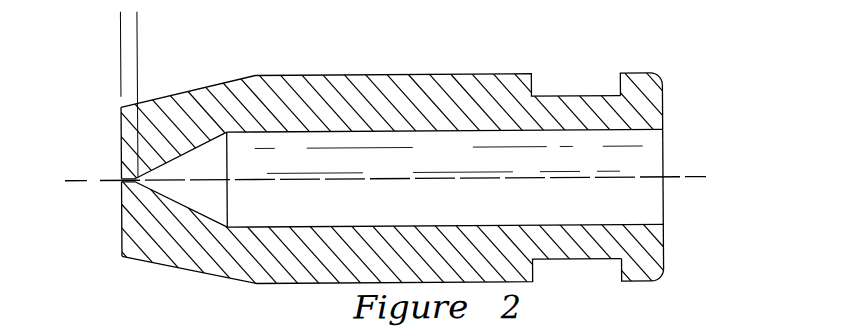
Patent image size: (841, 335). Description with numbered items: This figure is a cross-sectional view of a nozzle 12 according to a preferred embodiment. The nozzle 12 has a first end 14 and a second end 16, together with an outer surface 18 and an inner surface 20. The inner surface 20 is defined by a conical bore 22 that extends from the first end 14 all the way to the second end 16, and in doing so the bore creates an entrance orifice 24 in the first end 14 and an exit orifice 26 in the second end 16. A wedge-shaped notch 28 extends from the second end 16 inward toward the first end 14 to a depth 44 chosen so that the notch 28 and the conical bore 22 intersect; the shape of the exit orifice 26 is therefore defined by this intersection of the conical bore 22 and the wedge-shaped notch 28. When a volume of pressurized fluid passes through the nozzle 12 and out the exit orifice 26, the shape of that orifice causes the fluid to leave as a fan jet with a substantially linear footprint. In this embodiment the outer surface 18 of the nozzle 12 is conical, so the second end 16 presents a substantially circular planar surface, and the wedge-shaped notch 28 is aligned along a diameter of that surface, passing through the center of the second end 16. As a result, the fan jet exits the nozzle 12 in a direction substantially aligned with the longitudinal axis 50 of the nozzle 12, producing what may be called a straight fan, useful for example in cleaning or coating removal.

The nozzle 12 is at (667, 75).
The first end 14 is at (668, 256).
The second end 16 is at (121, 236).
The outer surface 18 is at (415, 74).
The inner surface 20 is at (437, 131).
The conical bore 22 is at (342, 214).
The entrance orifice 24 is at (664, 158).
The exit orifice 26 is at (132, 176).
The wedge-shaped notch 28 is at (133, 180).
The depth 44 is at (95, 20).
The longitudinal axis 50 is at (680, 178).